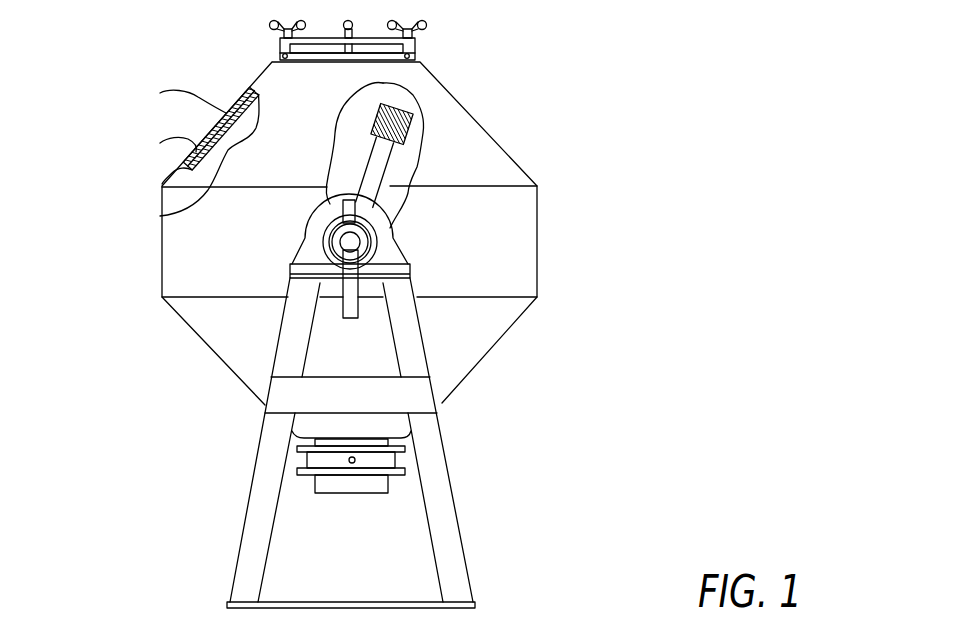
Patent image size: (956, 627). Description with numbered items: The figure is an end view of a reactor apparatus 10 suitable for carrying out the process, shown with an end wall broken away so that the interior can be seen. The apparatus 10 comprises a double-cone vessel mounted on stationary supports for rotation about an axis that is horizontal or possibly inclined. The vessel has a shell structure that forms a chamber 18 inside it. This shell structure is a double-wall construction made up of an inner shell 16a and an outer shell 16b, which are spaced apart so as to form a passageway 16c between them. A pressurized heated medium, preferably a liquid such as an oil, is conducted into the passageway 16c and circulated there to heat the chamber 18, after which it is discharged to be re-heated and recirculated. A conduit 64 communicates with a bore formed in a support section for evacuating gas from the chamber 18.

The apparatus 10 is at (562, 168).
The inner shell 16a is at (232, 112).
The outer shell 16b is at (205, 138).
The passageway 16c is at (160, 216).
The chamber 18 is at (413, 135).
The conduit 64 is at (410, 90).